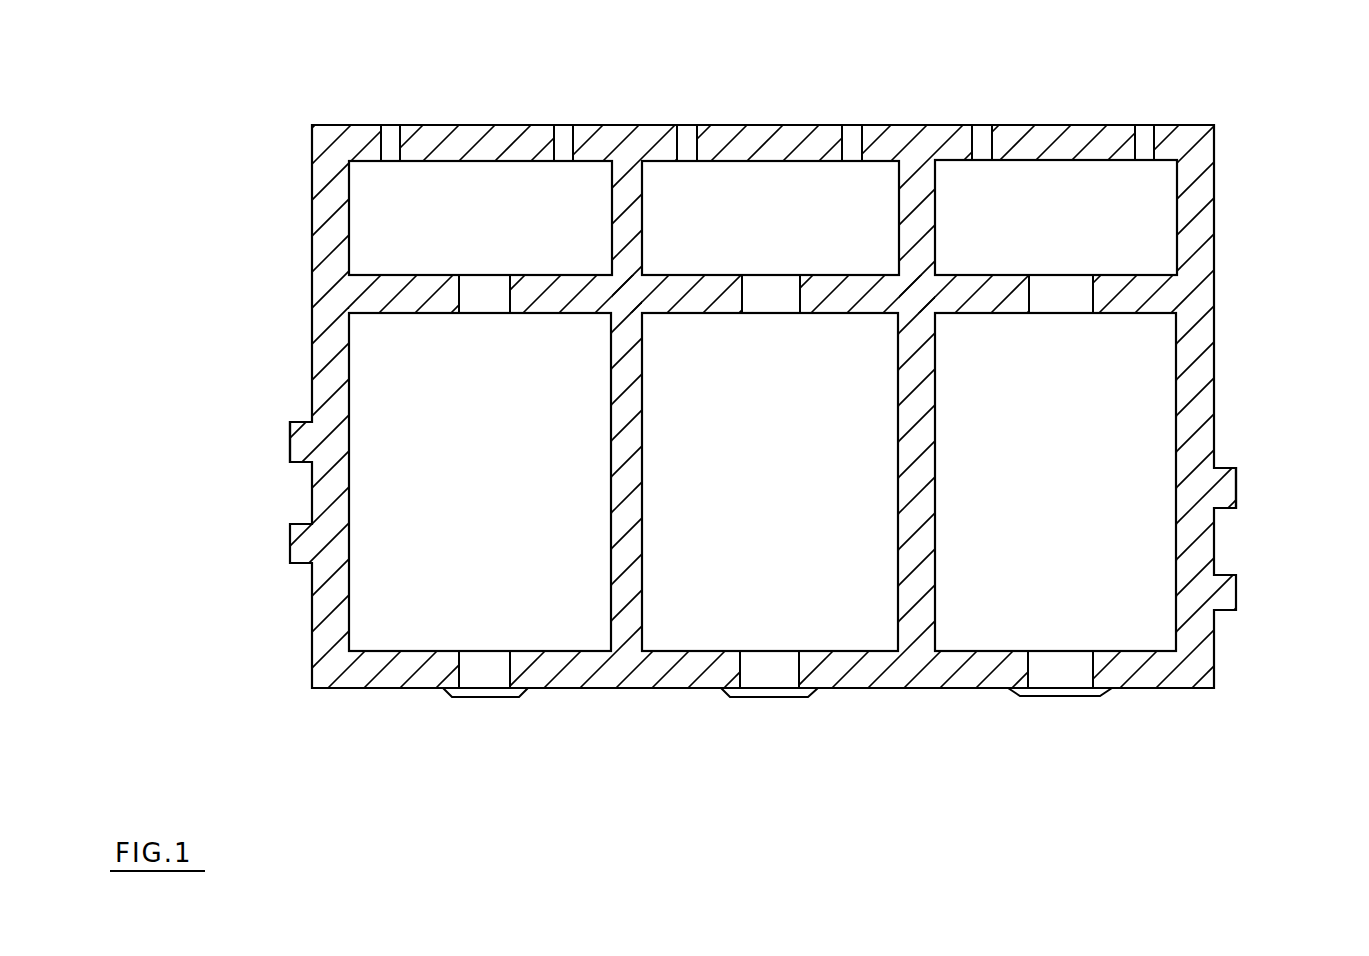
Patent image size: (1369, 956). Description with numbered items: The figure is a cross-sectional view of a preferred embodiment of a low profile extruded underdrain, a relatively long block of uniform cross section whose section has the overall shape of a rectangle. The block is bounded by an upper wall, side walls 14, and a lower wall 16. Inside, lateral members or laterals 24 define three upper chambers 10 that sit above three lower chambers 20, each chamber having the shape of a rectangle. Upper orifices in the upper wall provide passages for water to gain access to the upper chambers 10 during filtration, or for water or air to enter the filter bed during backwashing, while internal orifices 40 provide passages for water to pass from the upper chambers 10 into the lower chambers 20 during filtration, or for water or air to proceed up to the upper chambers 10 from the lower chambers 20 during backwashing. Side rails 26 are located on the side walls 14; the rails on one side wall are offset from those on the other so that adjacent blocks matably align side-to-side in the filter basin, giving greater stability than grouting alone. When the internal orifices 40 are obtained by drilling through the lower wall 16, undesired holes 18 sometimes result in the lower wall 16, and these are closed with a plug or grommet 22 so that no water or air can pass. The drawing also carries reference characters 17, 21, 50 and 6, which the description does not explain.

The upper chambers 10 is at (1155, 209).
The side walls 14 is at (313, 593).
The lower wall 16 is at (1170, 690).
The top wall 17 is at (1166, 123).
The undesired holes 18 is at (507, 664).
The lower chambers 20 is at (1211, 416).
The partition wall 21 is at (925, 188).
The plug or grommet 22 is at (445, 690).
The lateral members 24 is at (1137, 290).
The side rails 26 is at (1223, 485).
The internal orifices 40 is at (473, 275).
The top groove 50 is at (385, 125).
The side tab 6 is at (292, 434).